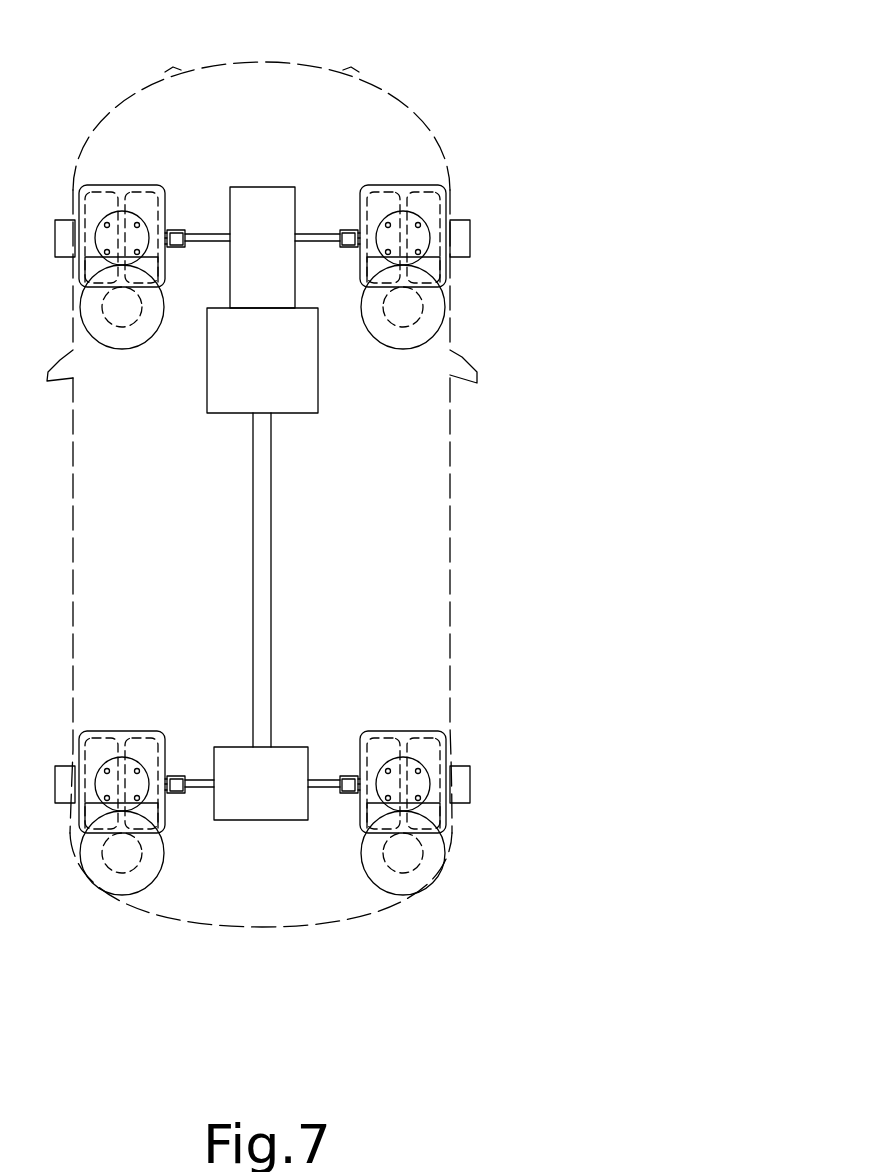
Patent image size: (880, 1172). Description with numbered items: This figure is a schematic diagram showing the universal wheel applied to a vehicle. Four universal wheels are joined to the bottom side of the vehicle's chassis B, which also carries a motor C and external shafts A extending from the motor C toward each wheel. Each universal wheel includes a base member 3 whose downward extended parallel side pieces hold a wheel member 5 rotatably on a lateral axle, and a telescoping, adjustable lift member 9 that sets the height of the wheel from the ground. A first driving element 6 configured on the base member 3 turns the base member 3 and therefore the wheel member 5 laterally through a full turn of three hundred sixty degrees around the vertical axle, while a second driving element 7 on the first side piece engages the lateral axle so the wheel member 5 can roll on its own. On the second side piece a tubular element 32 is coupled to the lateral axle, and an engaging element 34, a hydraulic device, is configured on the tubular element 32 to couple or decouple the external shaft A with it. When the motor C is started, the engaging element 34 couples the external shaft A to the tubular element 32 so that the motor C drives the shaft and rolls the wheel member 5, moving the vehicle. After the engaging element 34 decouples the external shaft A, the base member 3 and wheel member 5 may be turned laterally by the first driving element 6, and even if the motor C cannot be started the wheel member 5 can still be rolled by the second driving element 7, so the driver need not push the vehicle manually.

The base member 3 is at (403, 187).
The wheel member 5 is at (434, 204).
The lift member 9 is at (423, 227).
The second driving element 7 is at (462, 238).
The first driving element 6 is at (413, 307).
The engaging element 34 is at (349, 233).
The tubular element 32 is at (351, 250).
The external shaft A is at (318, 237).
The vehicle's chassis B is at (418, 533).
The motor C is at (242, 220).